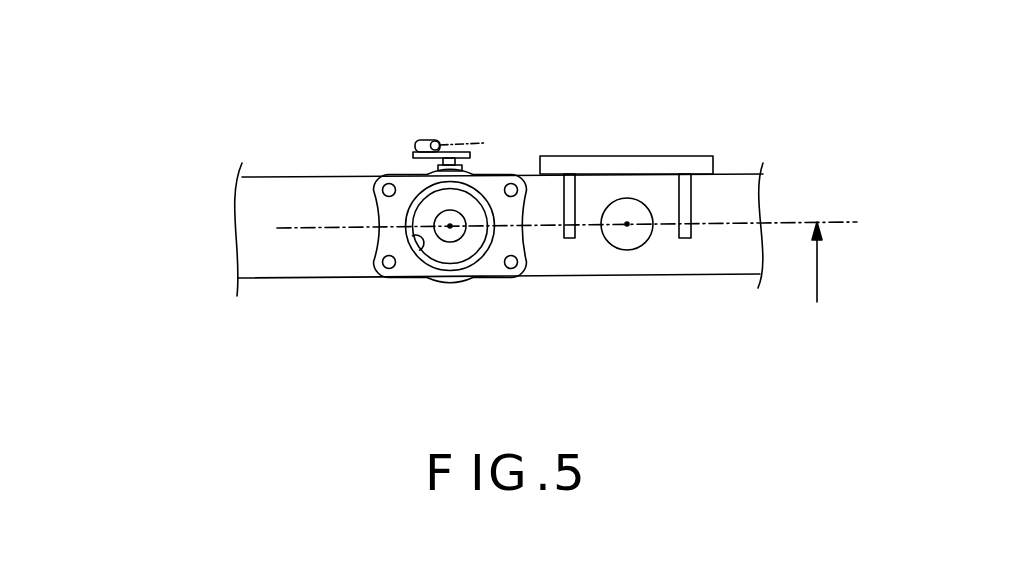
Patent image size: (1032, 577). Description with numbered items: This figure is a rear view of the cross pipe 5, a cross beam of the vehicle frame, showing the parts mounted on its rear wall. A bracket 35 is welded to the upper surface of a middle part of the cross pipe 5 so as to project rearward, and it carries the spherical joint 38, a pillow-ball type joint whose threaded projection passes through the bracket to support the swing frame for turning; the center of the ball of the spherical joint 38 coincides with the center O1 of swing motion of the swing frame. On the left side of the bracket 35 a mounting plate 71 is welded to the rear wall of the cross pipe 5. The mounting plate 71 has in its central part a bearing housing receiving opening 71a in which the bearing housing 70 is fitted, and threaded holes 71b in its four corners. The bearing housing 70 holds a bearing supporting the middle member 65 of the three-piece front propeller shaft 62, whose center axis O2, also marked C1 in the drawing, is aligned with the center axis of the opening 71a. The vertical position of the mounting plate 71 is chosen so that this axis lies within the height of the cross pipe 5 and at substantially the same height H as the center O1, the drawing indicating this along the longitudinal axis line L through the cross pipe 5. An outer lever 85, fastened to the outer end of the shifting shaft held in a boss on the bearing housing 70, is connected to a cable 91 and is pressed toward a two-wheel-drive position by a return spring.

The cross pipe 5 is at (263, 280).
The bracket 35 is at (626, 168).
The spherical joint 38 is at (638, 248).
The front propeller shaft 62 is at (386, 154).
The middle member 65 is at (440, 212).
The bearing housing 70 is at (480, 217).
The mounting plate 71 is at (422, 280).
The bearing housing receiving opening 71a is at (418, 240).
The threaded holes 71b is at (383, 184).
The outer lever 85 is at (462, 151).
The cable 91 is at (485, 142).
The pipe axis L is at (307, 227).
The height H is at (828, 262).
The center of swing motion O1 is at (627, 224).
The center axis of the middle member O2 is at (450, 228).
The flange center C1 is at (494, 283).